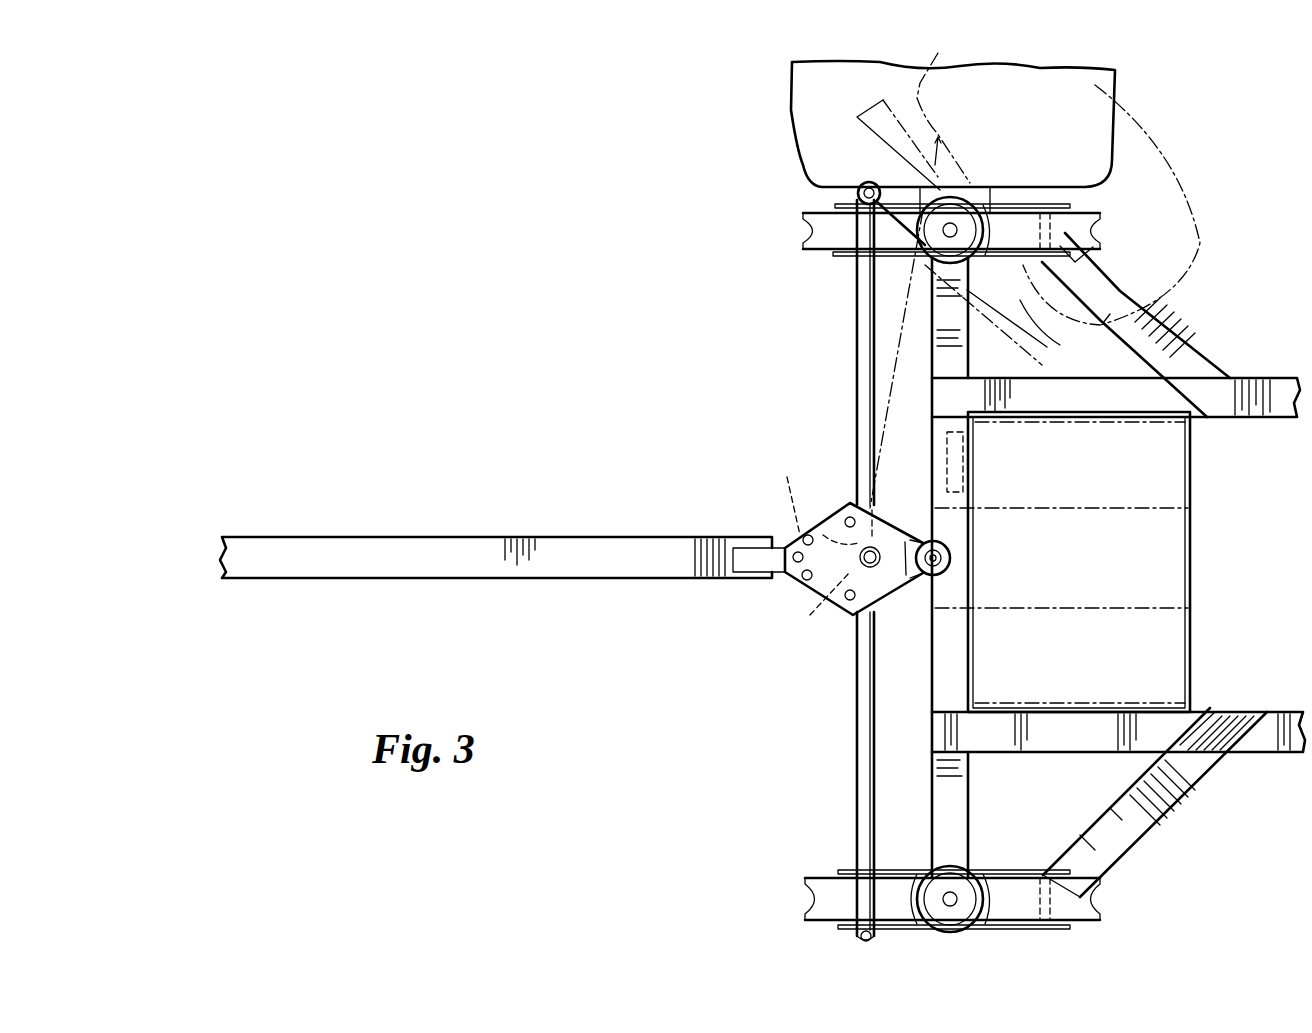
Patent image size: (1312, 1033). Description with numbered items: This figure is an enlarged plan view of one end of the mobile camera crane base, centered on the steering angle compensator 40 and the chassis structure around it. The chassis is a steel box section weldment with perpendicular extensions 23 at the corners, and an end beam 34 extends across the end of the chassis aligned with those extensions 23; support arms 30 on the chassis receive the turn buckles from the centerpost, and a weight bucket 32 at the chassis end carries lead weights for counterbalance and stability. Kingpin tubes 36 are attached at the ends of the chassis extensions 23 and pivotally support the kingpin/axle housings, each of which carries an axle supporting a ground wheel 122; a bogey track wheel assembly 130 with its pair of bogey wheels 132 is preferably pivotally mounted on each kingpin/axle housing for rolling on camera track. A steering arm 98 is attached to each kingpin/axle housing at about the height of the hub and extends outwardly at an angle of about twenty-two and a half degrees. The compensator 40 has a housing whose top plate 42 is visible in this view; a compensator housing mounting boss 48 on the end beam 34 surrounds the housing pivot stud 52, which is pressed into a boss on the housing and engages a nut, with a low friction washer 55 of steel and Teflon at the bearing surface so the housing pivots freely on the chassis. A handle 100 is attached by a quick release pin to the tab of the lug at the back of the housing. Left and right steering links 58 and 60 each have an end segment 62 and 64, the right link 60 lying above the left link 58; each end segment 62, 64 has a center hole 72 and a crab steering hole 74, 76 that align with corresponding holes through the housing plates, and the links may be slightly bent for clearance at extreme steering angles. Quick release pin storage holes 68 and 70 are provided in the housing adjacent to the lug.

The perpendicular extensions 23 is at (957, 330).
The support arms 30 is at (1195, 370).
The weight buckets 32 is at (1150, 562).
The end beam 34 is at (950, 800).
The kingpin tubes 36 is at (963, 187).
The steering angle compensator 40 is at (864, 543).
The top plate 42 is at (827, 590).
The compensator housing mounting boss 48 is at (925, 545).
The housing pivot stud 52 is at (940, 558).
The low friction washer 55 is at (935, 565).
The left steering link 58 is at (857, 322).
The right steering link 60 is at (857, 775).
The end segment 62 is at (781, 492).
The end segment 64 is at (848, 588).
The quick release pin storage hole 68 is at (800, 535).
The quick release pin storage hole 70 is at (795, 578).
The center hole 72 is at (875, 550).
The crab steering hole 74 is at (845, 518).
The crab steering hole 76 is at (848, 600).
The steering arm 98 is at (866, 182).
The handle 100 is at (436, 556).
The wheel 122 is at (1092, 107).
The bogey track wheel assembly 130 is at (833, 256).
The bogey wheels 132 is at (803, 216).